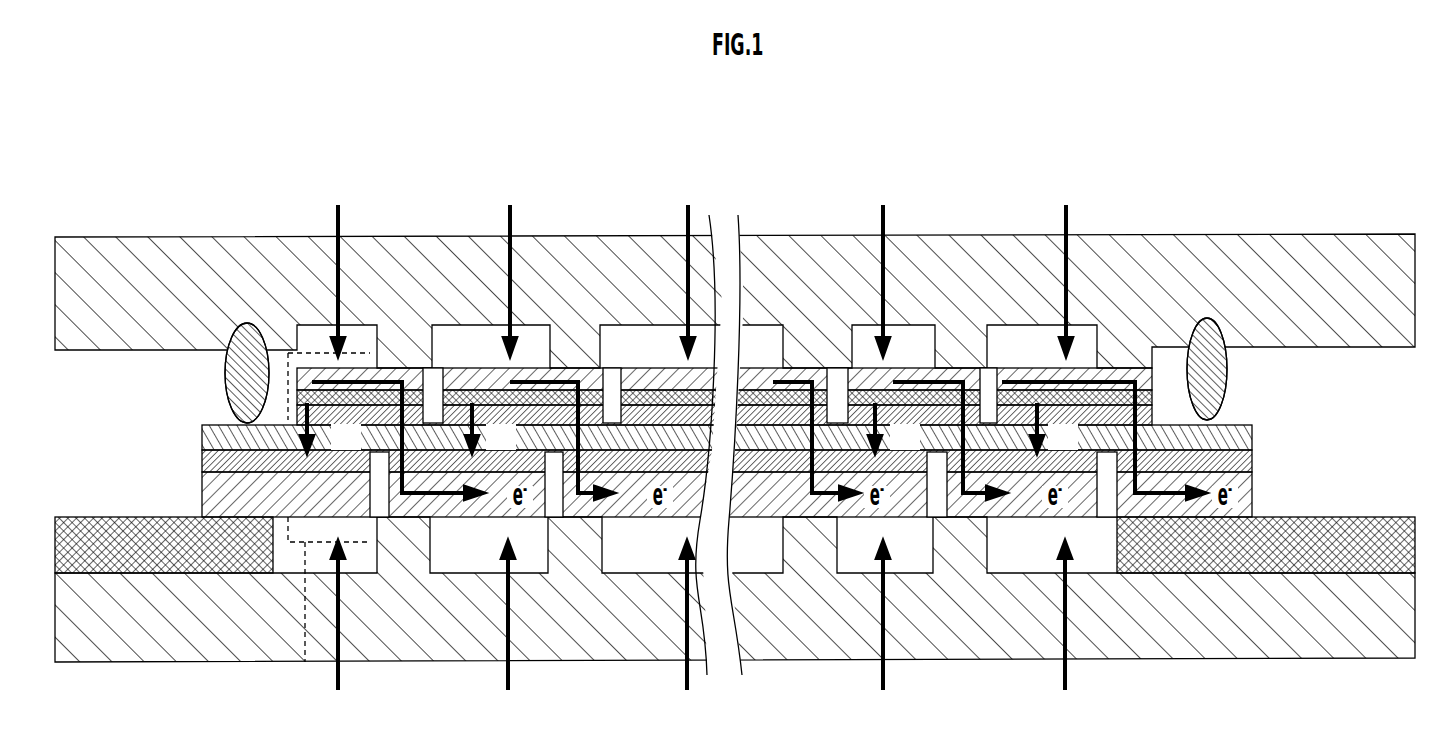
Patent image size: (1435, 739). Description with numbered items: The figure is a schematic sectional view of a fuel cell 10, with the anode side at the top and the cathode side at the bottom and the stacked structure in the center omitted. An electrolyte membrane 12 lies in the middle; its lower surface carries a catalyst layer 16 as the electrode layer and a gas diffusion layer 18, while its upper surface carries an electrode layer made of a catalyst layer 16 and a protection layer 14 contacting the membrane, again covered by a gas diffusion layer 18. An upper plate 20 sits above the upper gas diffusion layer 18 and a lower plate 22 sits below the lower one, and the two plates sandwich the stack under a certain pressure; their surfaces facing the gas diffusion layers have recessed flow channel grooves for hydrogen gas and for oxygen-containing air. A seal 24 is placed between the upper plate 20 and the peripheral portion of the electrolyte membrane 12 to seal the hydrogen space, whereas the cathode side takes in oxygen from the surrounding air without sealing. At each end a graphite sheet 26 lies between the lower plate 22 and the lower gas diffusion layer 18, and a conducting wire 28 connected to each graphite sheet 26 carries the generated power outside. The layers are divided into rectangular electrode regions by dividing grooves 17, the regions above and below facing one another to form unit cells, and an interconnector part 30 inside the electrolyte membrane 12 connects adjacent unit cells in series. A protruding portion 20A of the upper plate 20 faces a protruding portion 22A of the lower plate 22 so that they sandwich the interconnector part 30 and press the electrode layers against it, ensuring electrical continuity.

The fuel cell 10 is at (1225, 190).
The electrolyte membrane 12 is at (202, 431).
The protection layer 14 is at (1172, 398).
The catalyst layer 16 is at (202, 461).
The dividing groove 17 is at (437, 400).
The gas diffusion layer 18 is at (202, 491).
The upper plate 20 is at (254, 237).
The protruding portion 20A is at (362, 345).
The lower plate 22 is at (466, 662).
The protruding portion 22A is at (433, 545).
The seal 24 is at (225, 381).
The graphite sheet 26 is at (127, 517).
The conducting wire 28 is at (108, 517).
The interconnector part 30 is at (440, 398).